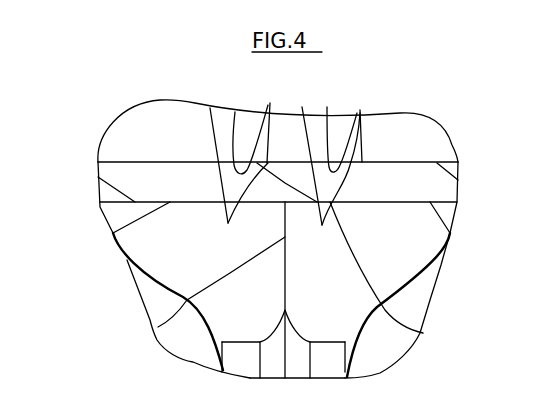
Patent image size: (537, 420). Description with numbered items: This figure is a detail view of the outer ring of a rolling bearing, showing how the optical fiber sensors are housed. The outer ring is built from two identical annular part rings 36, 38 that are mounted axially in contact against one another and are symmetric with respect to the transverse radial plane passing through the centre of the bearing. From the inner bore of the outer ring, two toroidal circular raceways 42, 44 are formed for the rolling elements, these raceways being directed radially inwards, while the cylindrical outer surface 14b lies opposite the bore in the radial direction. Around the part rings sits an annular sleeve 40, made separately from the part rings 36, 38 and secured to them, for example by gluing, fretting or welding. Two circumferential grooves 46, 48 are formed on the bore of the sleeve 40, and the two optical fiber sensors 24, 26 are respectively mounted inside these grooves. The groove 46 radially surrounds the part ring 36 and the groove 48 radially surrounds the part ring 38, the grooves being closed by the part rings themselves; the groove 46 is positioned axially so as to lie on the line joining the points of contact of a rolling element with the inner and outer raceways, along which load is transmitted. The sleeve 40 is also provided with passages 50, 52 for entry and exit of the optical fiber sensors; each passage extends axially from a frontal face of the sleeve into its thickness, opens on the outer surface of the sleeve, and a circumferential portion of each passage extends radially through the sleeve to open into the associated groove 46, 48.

The cylindrical outer surface 14b is at (150, 162).
The optical fiber sensor 24 is at (270, 104).
The optical fiber sensor 26 is at (360, 110).
The annular part ring 36 is at (193, 242).
The annular part ring 38 is at (379, 243).
The annular sleeve 40 is at (411, 187).
The toroidal circular raceway 42 is at (158, 327).
The toroidal circular raceway 44 is at (427, 333).
The circumferential groove 46 is at (210, 108).
The circumferential groove 48 is at (302, 107).
The passage 50 is at (235, 112).
The passage 52 is at (330, 103).